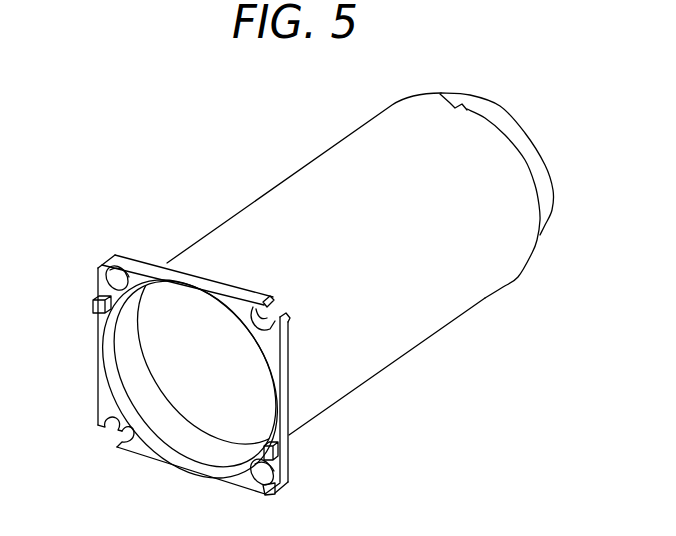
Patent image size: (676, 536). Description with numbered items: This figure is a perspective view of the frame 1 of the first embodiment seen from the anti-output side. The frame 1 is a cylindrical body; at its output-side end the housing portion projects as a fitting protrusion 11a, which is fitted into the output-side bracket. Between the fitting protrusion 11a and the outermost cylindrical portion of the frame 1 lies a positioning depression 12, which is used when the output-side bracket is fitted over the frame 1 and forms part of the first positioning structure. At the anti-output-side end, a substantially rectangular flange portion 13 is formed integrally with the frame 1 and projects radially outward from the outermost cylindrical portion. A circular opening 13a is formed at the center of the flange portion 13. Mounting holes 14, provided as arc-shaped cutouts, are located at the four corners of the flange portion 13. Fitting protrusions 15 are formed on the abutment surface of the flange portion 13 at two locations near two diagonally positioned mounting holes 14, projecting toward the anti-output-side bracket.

The frame 1 is at (187, 82).
The fitting protrusion 11a is at (540, 160).
The positioning depression 12 is at (442, 99).
The flange portion 13 is at (143, 262).
The circular opening 13a is at (155, 437).
The mounting holes 14 is at (111, 278).
The fitting protrusions 15 is at (93, 306).